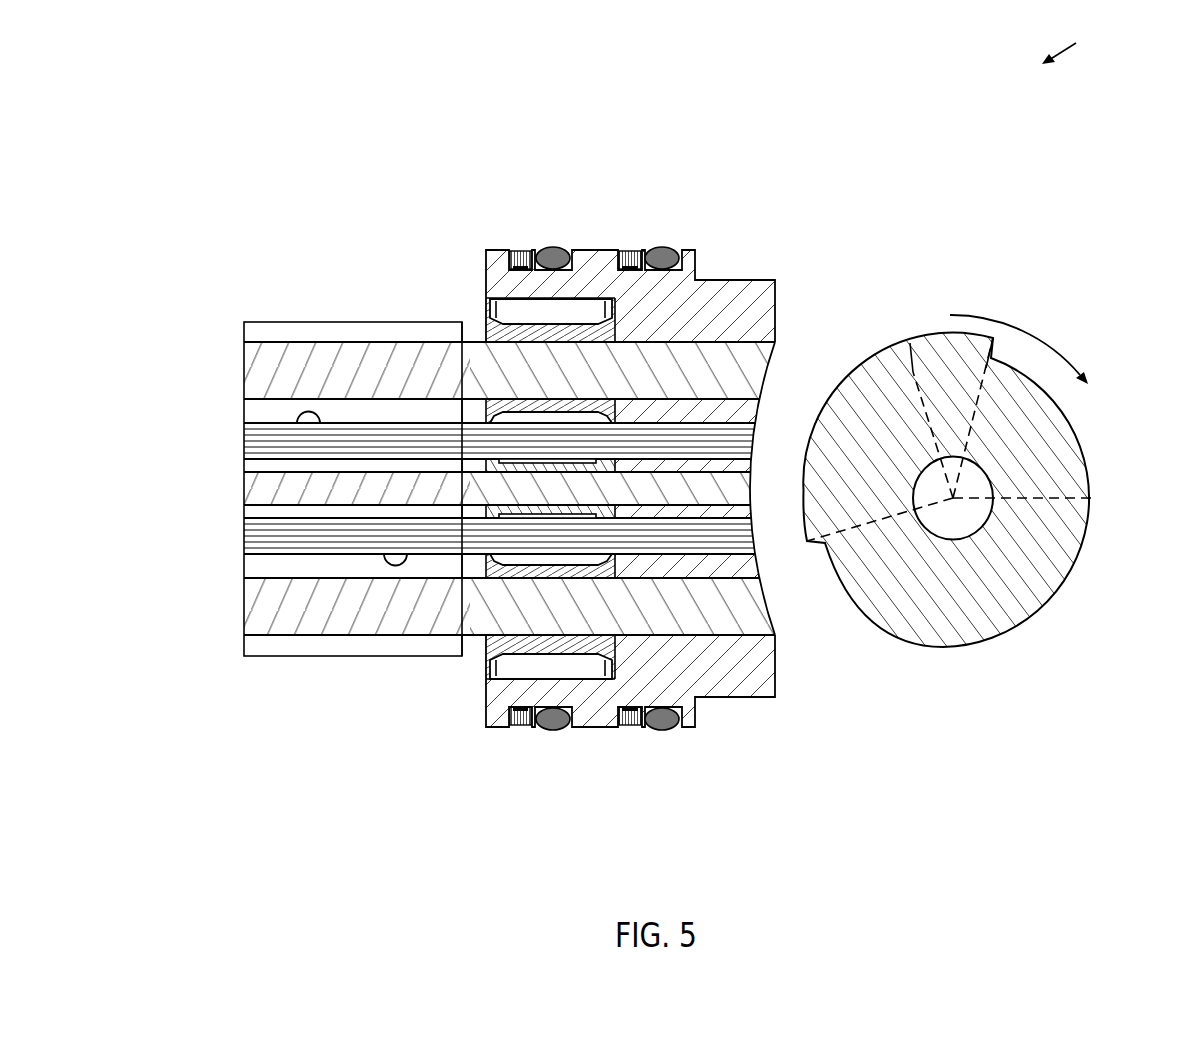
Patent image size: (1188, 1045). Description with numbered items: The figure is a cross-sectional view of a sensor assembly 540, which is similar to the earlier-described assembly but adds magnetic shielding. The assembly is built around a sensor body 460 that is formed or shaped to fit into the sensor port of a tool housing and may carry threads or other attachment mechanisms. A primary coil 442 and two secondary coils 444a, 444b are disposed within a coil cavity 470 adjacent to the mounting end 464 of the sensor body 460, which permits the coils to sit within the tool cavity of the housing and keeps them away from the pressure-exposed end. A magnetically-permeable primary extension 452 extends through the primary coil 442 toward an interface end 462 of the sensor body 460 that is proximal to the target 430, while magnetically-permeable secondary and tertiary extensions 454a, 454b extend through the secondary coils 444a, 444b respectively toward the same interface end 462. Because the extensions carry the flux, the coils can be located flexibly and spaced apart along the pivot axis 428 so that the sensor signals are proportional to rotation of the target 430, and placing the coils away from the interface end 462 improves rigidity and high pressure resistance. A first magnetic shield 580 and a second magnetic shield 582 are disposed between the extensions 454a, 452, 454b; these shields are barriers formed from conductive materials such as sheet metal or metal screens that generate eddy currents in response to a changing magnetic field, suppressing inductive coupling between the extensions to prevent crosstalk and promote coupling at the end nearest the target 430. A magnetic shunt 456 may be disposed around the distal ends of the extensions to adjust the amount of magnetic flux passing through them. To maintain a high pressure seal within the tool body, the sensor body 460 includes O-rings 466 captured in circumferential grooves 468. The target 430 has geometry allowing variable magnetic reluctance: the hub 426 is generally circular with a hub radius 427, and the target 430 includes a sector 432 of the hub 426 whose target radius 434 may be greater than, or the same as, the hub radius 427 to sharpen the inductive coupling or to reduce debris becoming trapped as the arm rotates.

The sensor assembly 540 is at (1083, 46).
The magnetic shunt 456 is at (316, 332).
The primary coil 442 is at (488, 466).
The secondary coil 444a is at (488, 310).
The secondary coil 444b is at (607, 660).
The circumferential groove 468 is at (518, 266).
The O-ring 466 is at (557, 255).
The secondary extension 454a is at (742, 360).
The tertiary extension 454b is at (773, 625).
The primary extension 452 is at (750, 488).
The interface end 462 is at (776, 677).
The target radius 434 is at (910, 343).
The sector 432 is at (977, 367).
The target 430 is at (942, 343).
The hub 426 is at (1058, 437).
The hub radius 427 is at (1093, 504).
The pivot axis 428 is at (953, 498).
The first magnetic shield 580 is at (243, 440).
The second magnetic shield 582 is at (243, 539).
The coil cavity 470 is at (487, 678).
The mounting end 464 is at (500, 717).
The sensor body 460 is at (583, 720).